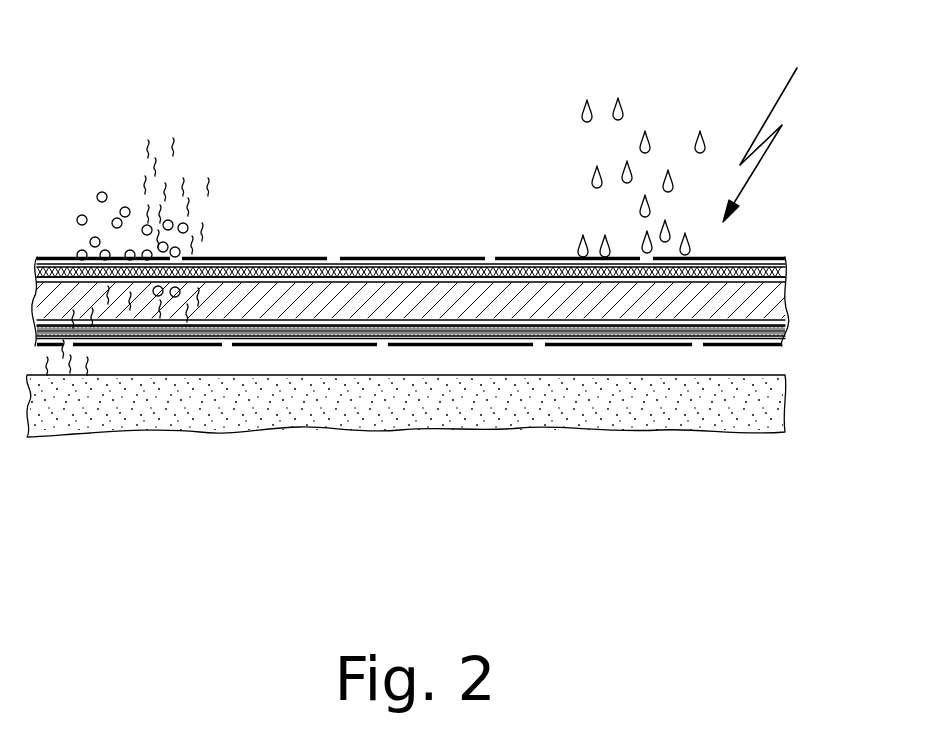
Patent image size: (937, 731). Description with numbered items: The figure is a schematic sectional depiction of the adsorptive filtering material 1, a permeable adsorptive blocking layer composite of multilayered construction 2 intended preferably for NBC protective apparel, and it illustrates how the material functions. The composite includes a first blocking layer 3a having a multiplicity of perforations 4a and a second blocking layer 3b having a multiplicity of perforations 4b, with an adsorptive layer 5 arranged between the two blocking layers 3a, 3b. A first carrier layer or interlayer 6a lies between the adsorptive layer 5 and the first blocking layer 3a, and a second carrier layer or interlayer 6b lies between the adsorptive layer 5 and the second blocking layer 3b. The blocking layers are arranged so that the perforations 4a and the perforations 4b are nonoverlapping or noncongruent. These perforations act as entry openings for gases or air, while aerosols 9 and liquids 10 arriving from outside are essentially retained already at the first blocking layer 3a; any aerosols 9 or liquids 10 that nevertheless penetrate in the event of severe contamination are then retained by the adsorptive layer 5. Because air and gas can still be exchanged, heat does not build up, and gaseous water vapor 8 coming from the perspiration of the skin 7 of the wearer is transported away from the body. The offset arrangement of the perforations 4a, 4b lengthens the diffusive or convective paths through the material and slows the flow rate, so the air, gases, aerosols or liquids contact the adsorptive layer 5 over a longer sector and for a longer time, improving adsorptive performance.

The adsorptive filtering material 1 is at (769, 131).
The multilayered construction 2 is at (449, 332).
The first blocking layer 3a is at (433, 262).
The second blocking layer 3b is at (572, 344).
The perforations 4a is at (332, 263).
The perforations 4b is at (383, 343).
The adsorptive layer 5 is at (303, 303).
The first carrier layer or interlayer 6a is at (534, 276).
The second carrier layer or interlayer 6b is at (655, 334).
The skin 7 is at (76, 415).
The water vapor 8 is at (197, 160).
The aerosols 9 is at (99, 193).
The liquids 10 is at (620, 112).